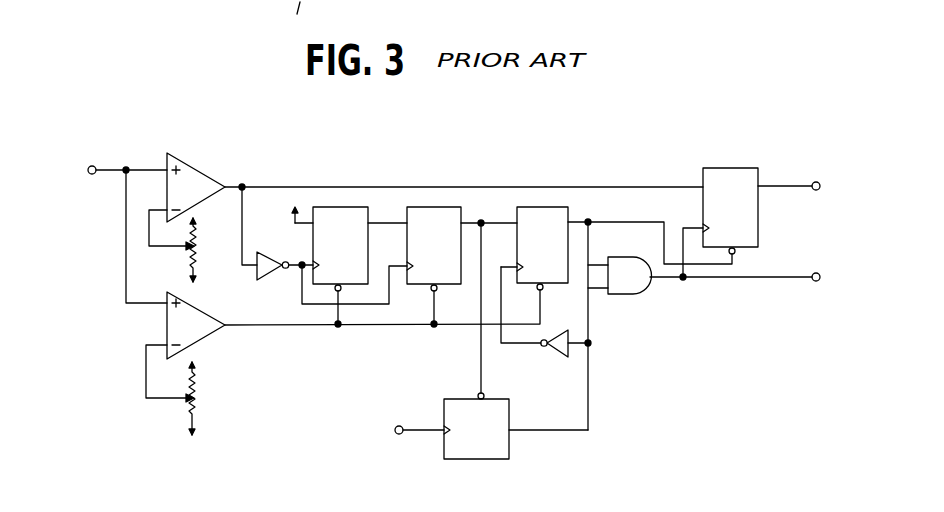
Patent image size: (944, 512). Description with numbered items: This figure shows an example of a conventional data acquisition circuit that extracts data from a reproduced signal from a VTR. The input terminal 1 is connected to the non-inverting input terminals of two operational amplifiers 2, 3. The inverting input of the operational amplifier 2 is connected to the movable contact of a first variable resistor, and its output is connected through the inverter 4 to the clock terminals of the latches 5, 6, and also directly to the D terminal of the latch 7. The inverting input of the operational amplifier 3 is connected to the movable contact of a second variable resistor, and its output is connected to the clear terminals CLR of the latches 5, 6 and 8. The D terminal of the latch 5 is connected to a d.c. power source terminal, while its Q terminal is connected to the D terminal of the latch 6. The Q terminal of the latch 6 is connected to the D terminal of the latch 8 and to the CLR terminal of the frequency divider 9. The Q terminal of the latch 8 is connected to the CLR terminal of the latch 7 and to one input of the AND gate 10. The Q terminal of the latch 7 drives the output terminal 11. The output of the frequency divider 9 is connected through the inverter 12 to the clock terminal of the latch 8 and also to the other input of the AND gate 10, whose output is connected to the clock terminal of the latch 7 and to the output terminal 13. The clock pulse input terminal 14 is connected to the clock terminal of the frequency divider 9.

The input terminal 1 is at (93, 166).
The operational amplifier 2 is at (203, 169).
The operational amplifier 3 is at (206, 334).
The inverter 4 is at (268, 252).
The latch 5 is at (333, 206).
The latch 6 is at (428, 206).
The latch 7 is at (723, 167).
The latch 8 is at (540, 206).
The frequency divider 9 is at (455, 398).
The AND gate 10 is at (634, 295).
The output terminal 11 is at (814, 181).
The inverter 12 is at (549, 358).
The output terminal 13 is at (815, 282).
The clock pulse input terminal 14 is at (398, 435).